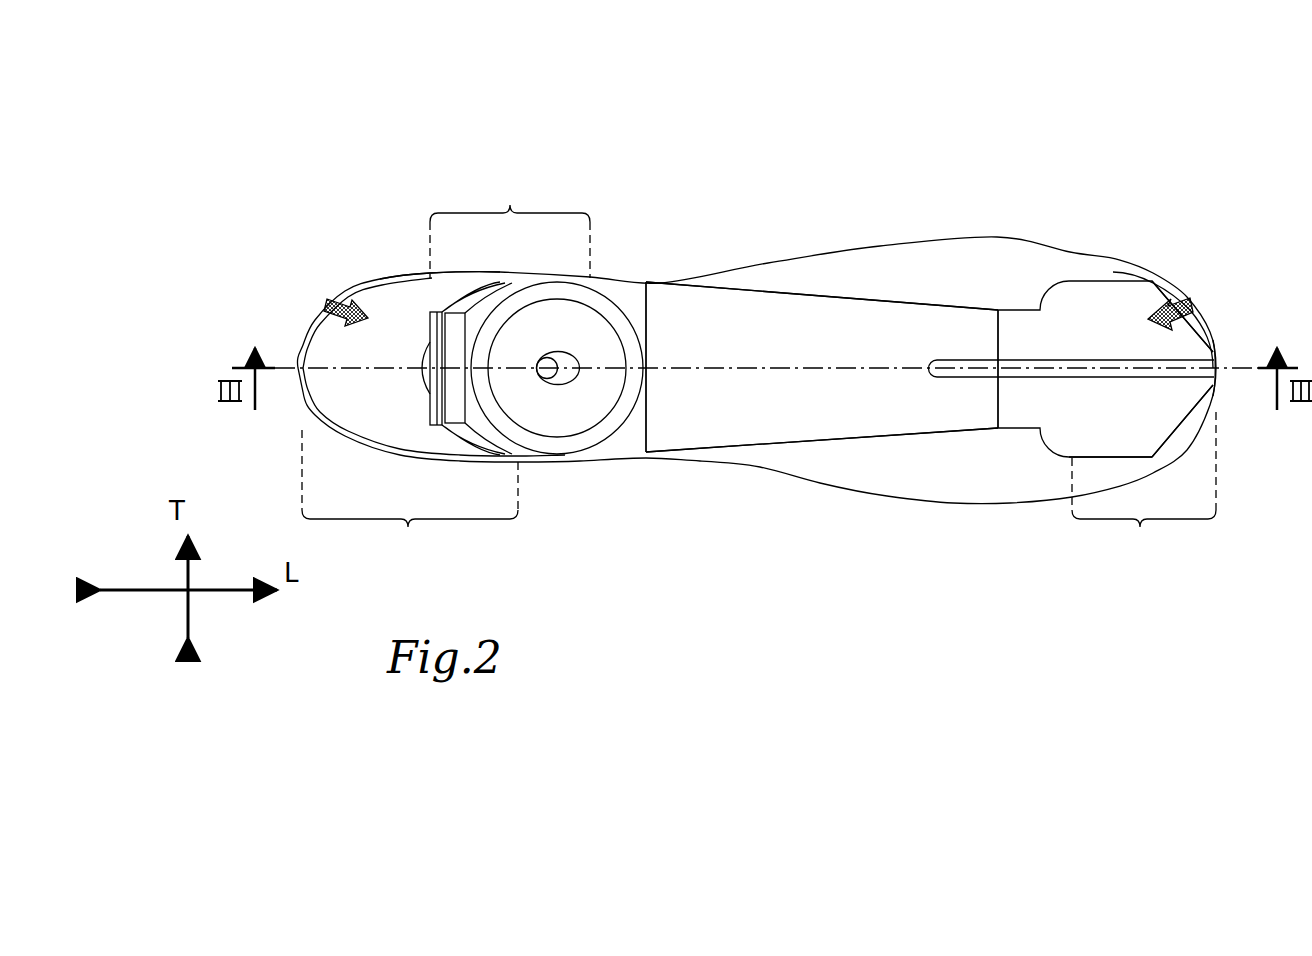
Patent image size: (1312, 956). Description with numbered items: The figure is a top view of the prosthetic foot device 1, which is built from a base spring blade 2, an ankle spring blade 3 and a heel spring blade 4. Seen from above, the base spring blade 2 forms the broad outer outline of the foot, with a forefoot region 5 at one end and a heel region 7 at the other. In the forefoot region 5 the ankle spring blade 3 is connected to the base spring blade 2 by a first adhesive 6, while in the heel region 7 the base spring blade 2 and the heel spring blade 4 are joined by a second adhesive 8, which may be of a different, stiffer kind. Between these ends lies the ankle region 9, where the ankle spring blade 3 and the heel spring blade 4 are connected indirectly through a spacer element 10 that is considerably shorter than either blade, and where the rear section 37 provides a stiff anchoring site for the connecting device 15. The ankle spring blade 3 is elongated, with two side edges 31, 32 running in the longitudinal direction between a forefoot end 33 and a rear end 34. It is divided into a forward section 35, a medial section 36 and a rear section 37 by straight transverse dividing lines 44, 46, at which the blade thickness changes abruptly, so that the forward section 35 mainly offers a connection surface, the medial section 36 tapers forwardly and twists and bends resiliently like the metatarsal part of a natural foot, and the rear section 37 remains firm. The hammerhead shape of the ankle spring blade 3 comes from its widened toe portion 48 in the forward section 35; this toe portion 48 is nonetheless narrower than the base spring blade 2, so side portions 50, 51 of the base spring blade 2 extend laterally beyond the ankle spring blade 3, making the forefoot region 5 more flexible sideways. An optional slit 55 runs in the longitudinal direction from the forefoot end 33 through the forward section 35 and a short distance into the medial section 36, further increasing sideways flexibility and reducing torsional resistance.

The prosthetic foot device 1 is at (322, 126).
The base spring blade 2 is at (988, 232).
The ankle spring blade 3 is at (826, 290).
The heel spring blade 4 is at (413, 278).
The forefoot region 5 is at (1144, 487).
The first adhesive 6 is at (1177, 307).
The heel region 7 is at (410, 497).
The second adhesive 8 is at (331, 300).
The ankle region 9 is at (510, 228).
The spacer element 10 is at (440, 400).
The connecting device 15 is at (566, 440).
The side edge 31 is at (758, 445).
The side edge 32 is at (768, 292).
The forefoot end 33 is at (1220, 352).
The rear end 34 is at (297, 352).
The forward section 35 is at (1130, 424).
The medial section 36 is at (843, 407).
The rear section 37 is at (628, 440).
The dividing line 44 is at (998, 346).
The dividing line 46 is at (648, 330).
The widened toe portion 48 is at (1176, 418).
The side portion 50 is at (1113, 460).
The side portion 51 is at (1113, 272).
The slit 55 is at (1096, 364).